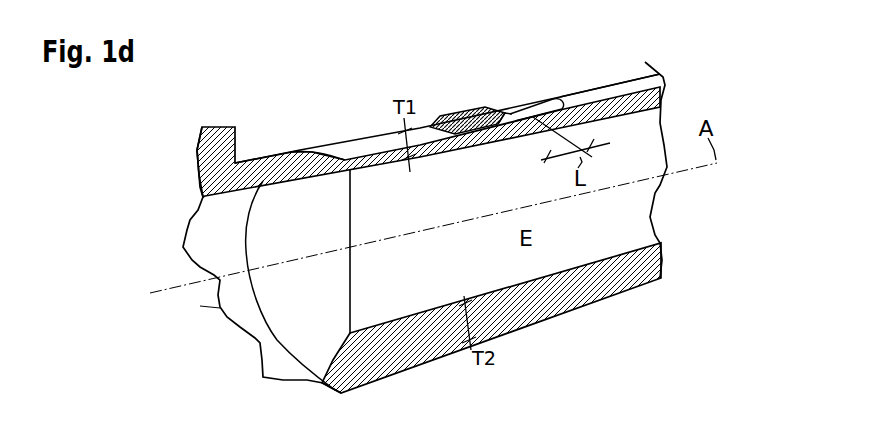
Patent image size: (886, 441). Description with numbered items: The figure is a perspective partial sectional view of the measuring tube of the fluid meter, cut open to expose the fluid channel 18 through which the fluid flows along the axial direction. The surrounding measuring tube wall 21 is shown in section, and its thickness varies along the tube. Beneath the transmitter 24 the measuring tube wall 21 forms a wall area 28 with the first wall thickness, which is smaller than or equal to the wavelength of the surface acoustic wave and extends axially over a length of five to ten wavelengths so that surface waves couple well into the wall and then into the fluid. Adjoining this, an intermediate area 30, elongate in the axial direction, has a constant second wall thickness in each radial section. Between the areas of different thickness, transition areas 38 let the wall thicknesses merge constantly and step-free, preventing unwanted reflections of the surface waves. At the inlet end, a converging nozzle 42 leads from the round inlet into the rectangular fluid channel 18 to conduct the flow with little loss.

The fluid channel 18 is at (485, 207).
The measuring tube wall 21 is at (429, 233).
The transmitter 24 is at (467, 87).
The wall area 28 is at (492, 64).
The intermediate area 30 is at (610, 65).
The transition area 38 is at (428, 95).
The converging nozzle 42 is at (368, 295).